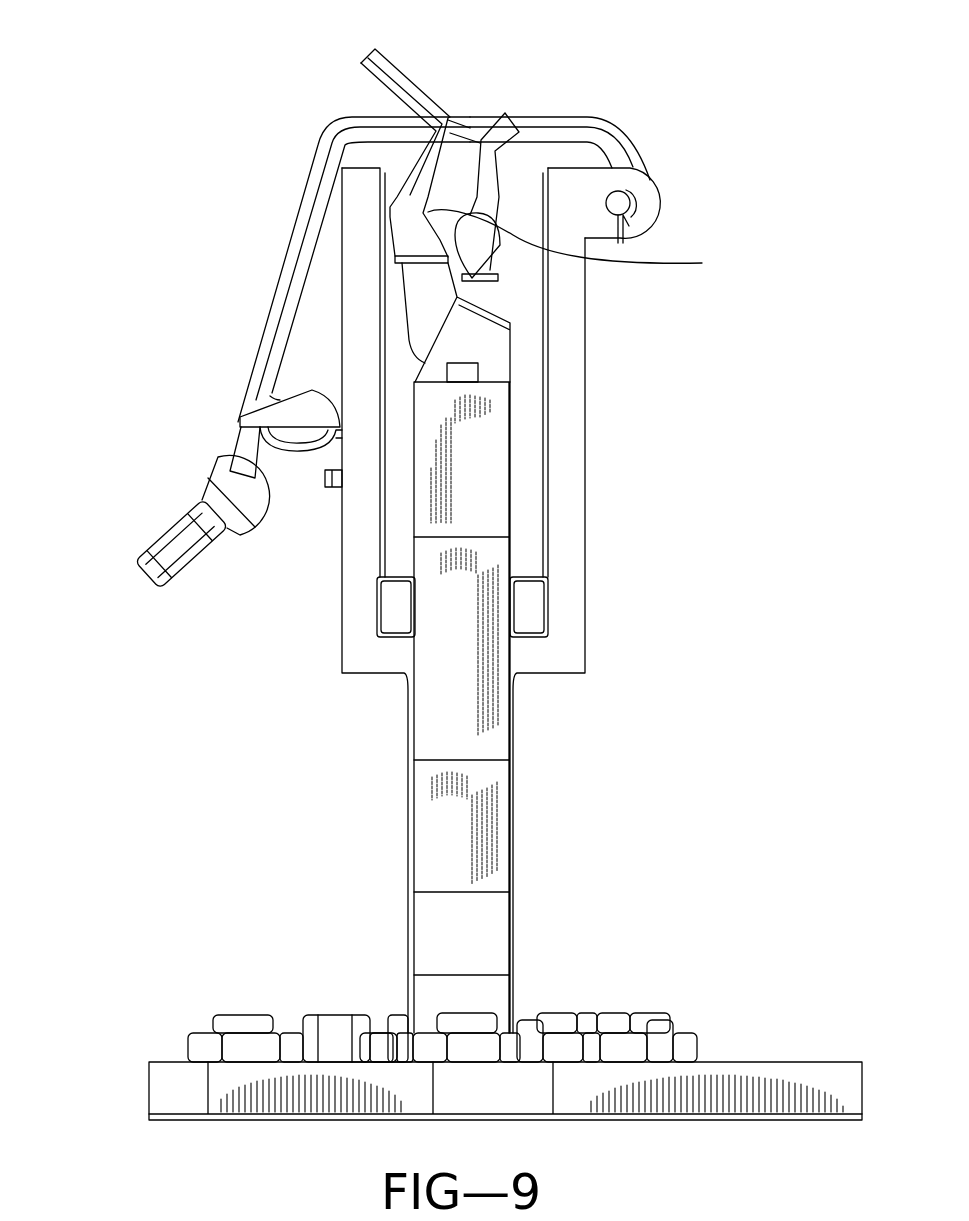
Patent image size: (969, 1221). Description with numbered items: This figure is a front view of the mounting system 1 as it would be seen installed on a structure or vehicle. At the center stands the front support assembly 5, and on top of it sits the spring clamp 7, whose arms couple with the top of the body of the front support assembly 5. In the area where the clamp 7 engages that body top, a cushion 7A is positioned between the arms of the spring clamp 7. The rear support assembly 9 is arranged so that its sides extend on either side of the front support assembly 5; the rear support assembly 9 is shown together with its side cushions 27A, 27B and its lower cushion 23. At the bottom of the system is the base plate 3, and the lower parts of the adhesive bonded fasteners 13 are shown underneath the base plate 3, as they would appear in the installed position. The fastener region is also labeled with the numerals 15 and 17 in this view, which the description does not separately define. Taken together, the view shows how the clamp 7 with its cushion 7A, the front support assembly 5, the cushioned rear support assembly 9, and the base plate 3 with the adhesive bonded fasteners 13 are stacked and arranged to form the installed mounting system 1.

The mounting system 1 is at (118, 242).
The base plate 3 is at (149, 1083).
The front support assembly 5 is at (512, 440).
The spring clamp 7 is at (393, 67).
The cushion 7A is at (586, 246).
The rear support assembly 9 is at (218, 376).
The adhesive bonded fasteners 13 is at (245, 1120).
The washer 15 is at (255, 1035).
The nut 17 is at (658, 1035).
The lower cushion 23 is at (520, 577).
The side cushion 27A is at (390, 190).
The side cushion 27B is at (545, 198).